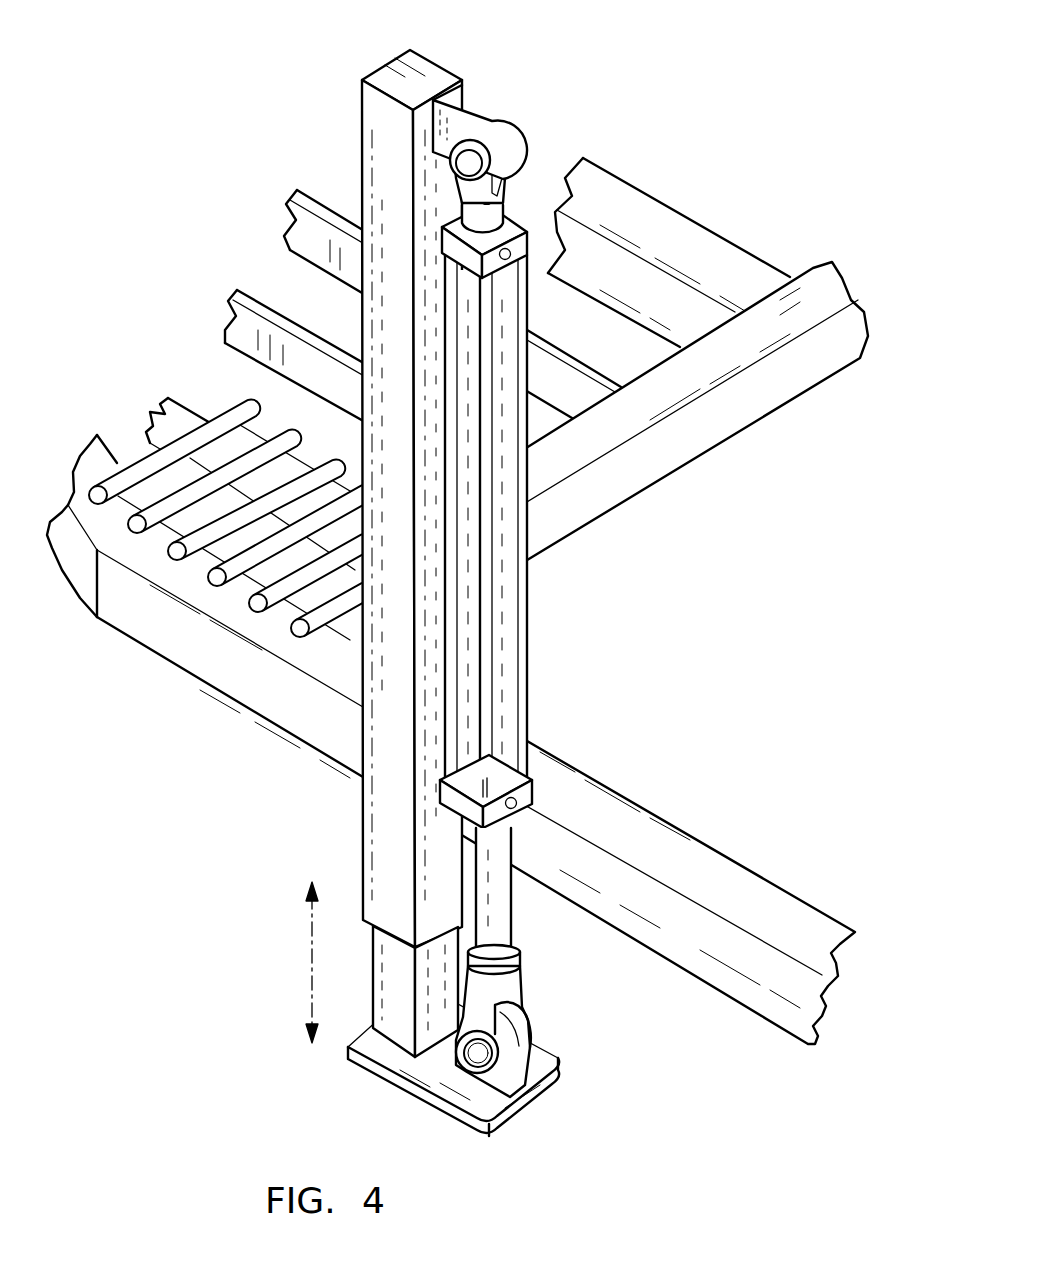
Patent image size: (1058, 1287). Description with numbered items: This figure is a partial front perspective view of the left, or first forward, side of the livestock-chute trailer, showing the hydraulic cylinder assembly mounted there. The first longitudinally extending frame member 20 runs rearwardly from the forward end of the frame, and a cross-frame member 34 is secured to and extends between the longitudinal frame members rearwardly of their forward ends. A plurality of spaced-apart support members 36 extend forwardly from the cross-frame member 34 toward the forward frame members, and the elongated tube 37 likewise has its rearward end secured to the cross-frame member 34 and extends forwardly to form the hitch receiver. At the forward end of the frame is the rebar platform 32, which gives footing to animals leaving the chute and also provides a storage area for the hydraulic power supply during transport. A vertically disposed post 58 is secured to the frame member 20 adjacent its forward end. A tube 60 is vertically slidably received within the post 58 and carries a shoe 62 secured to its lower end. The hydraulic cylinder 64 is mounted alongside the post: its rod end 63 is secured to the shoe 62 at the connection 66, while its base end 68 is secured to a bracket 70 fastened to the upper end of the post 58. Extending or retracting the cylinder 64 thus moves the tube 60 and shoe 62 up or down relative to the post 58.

The first longitudinally extending frame member 20 is at (676, 817).
The rebar platform 32 is at (138, 420).
The cross-frame member 34 is at (613, 487).
The support members 36 is at (285, 236).
The tube 37 is at (677, 232).
The post 58 is at (393, 814).
The tube 60 is at (403, 972).
The shoe 62 is at (412, 1090).
The rod end 63 is at (532, 1032).
The hydraulic cylinder 64 is at (505, 689).
The connection point 66 is at (476, 1058).
The base end 68 is at (513, 215).
The bracket 70 is at (457, 124).